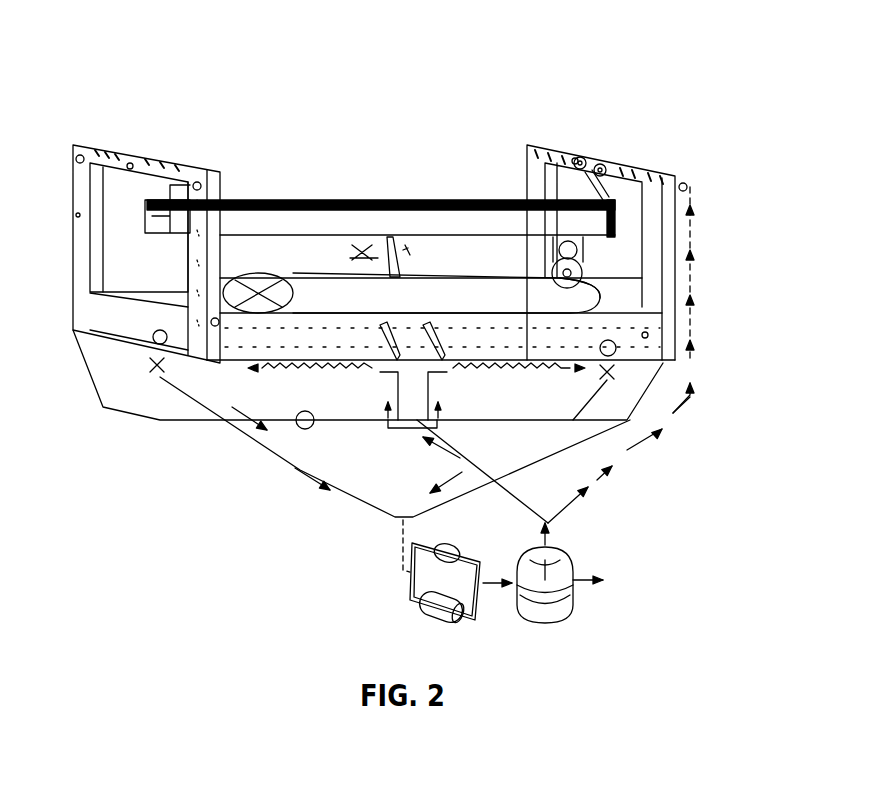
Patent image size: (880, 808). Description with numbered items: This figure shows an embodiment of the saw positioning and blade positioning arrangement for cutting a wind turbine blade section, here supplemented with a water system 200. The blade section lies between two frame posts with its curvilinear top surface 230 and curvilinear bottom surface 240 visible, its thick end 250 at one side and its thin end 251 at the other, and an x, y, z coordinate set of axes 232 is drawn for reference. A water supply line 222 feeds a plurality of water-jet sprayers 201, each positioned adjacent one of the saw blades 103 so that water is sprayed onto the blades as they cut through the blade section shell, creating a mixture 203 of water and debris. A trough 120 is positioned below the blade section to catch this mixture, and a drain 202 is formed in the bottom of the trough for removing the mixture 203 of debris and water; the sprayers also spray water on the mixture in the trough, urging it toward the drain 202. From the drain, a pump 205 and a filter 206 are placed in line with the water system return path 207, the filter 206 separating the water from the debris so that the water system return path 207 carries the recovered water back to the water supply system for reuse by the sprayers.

The water system 200 is at (703, 450).
The trough 120 is at (110, 375).
The water-jet sprayers 201 is at (530, 290).
The drain 202 is at (618, 352).
The mixture of water and debris 203 is at (260, 443).
The pump 205 is at (410, 588).
The filter 206 is at (587, 587).
The water system return path 207 is at (578, 495).
The water supply line 222 is at (653, 168).
The curvilinear top surface 230 is at (310, 277).
The x, y, z coordinate set of axes 232 is at (378, 250).
The curvilinear bottom surface 240 is at (253, 275).
The thick end 250 is at (293, 281).
The thin end 251 is at (530, 293).
The saw blades 103 is at (580, 275).